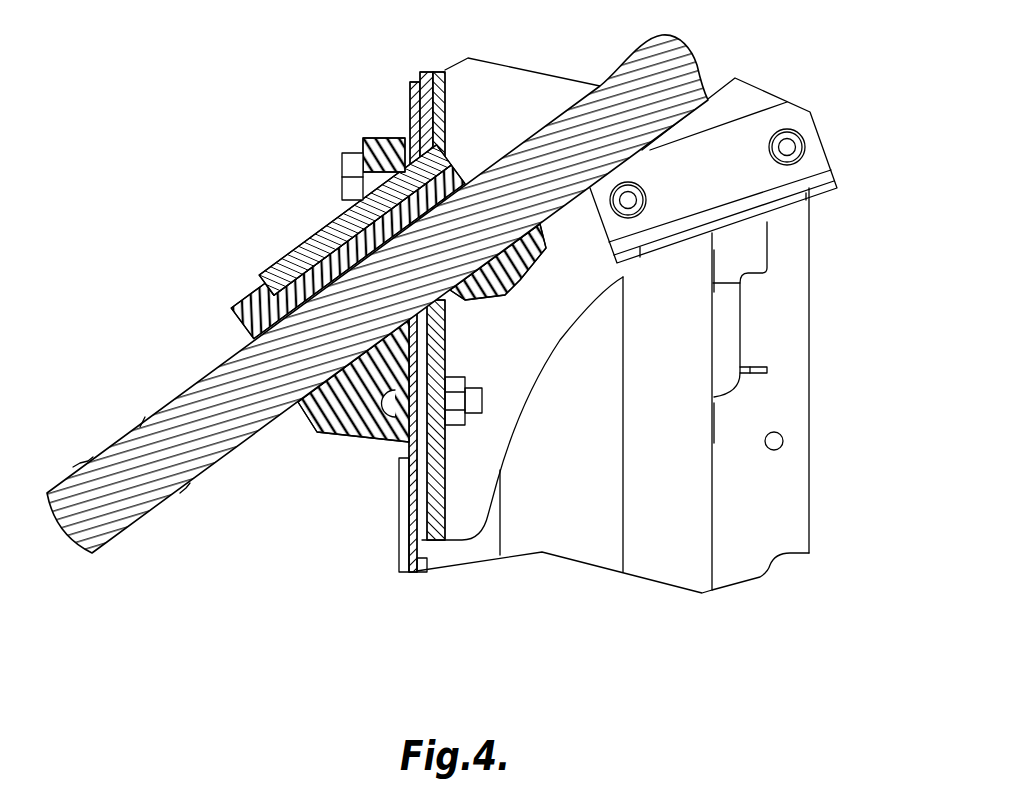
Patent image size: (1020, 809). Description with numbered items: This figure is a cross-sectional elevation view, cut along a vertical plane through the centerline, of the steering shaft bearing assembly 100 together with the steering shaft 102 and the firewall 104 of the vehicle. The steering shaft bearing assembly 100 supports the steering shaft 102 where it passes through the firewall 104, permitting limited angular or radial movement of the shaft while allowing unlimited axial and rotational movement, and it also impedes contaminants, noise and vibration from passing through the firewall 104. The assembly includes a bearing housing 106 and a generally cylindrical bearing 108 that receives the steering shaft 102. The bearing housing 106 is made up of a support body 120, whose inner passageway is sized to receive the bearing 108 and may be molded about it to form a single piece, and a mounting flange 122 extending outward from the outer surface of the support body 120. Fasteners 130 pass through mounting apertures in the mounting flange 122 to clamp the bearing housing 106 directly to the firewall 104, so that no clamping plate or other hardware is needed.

The steering shaft bearing assembly 100 is at (439, 319).
The steering shaft 102 is at (92, 555).
The firewall 104 is at (413, 482).
The bearing housing 106 is at (294, 245).
The bearing 108 is at (260, 292).
The support body 120 is at (330, 434).
The mounting flange 122 is at (383, 133).
The fasteners 130 is at (342, 160).